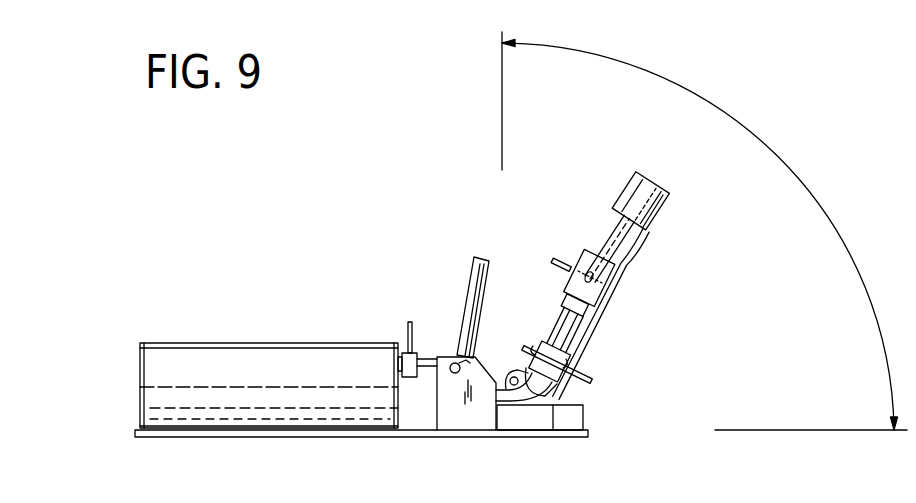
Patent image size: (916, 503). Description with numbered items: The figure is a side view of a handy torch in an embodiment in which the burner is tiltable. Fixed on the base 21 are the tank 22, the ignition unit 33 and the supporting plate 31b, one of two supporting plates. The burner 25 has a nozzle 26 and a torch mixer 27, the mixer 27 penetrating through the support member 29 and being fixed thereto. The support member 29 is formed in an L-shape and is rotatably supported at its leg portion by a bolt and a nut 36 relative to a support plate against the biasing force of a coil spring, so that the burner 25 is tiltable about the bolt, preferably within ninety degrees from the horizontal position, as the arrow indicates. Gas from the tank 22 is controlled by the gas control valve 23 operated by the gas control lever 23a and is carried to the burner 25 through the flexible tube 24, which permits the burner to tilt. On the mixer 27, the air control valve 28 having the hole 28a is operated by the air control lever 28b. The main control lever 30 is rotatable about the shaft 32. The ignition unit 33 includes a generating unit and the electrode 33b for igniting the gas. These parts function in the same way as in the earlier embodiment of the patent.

The base 21 is at (217, 437).
The tank 22 is at (200, 357).
The gas control valve 23 is at (404, 352).
The gas control lever 23a is at (410, 322).
The flexible tube 24 is at (511, 422).
The burner 25 is at (599, 230).
The nozzle 26 is at (632, 170).
The torch mixer 27 is at (577, 336).
The air control valve 28 is at (585, 256).
The hole 28a is at (600, 278).
The air control lever 28b is at (556, 261).
The support member 29 is at (594, 382).
The main control lever 30 is at (477, 258).
The supporting plate 31b is at (444, 425).
The shaft 32 is at (452, 362).
The ignition unit 33 is at (548, 418).
The electrode 33b is at (664, 186).
The nut 36 is at (513, 377).